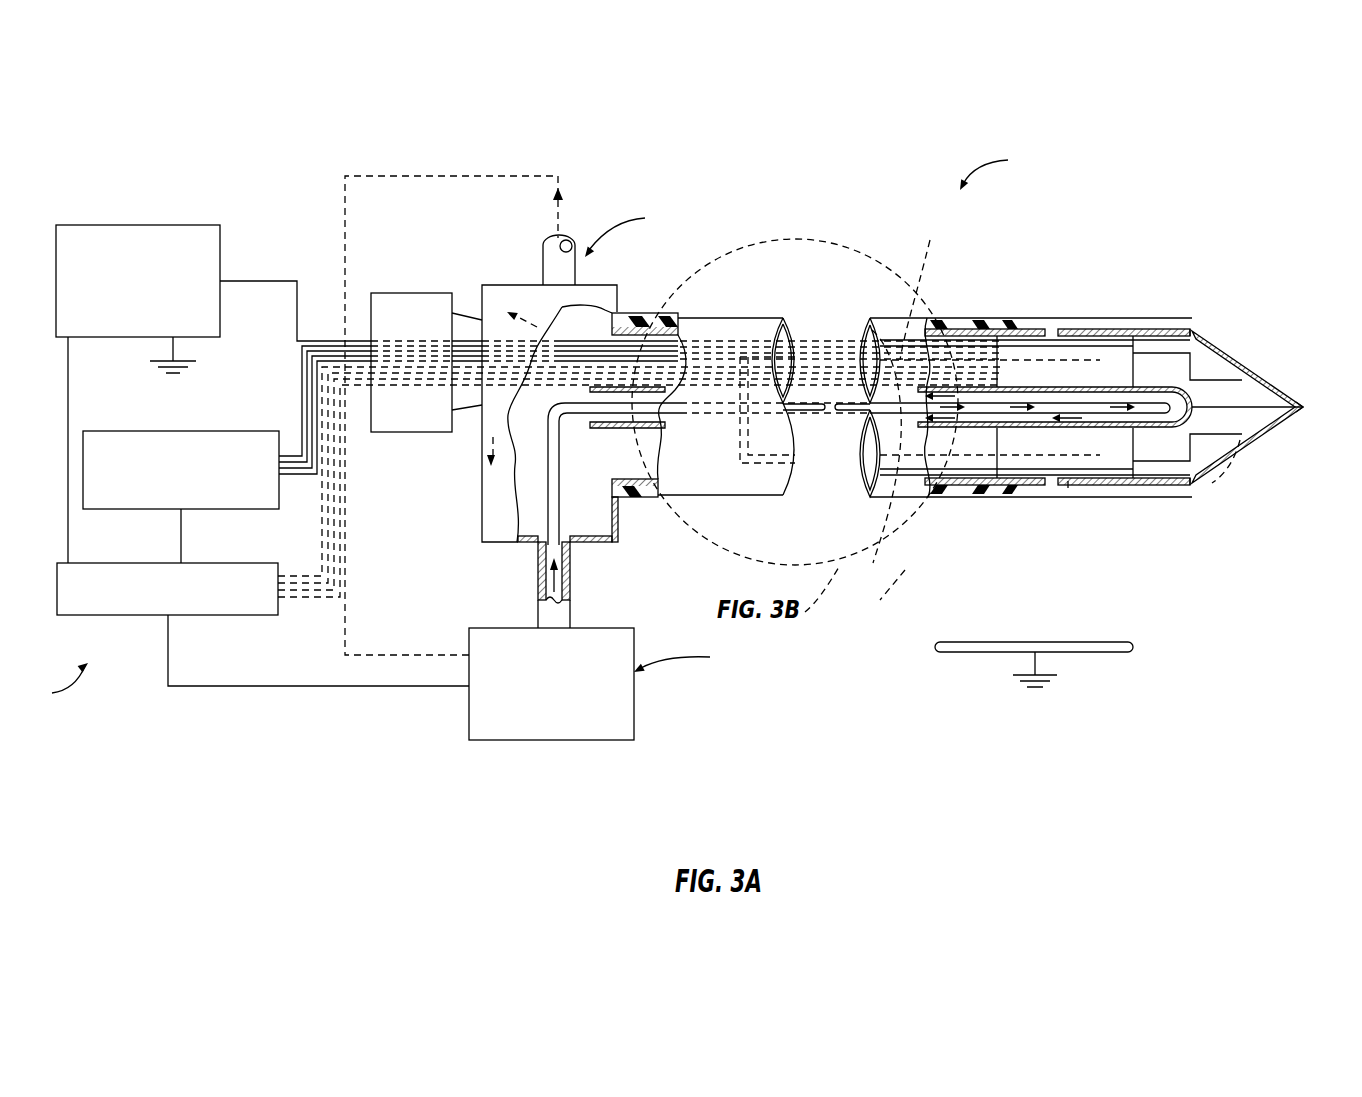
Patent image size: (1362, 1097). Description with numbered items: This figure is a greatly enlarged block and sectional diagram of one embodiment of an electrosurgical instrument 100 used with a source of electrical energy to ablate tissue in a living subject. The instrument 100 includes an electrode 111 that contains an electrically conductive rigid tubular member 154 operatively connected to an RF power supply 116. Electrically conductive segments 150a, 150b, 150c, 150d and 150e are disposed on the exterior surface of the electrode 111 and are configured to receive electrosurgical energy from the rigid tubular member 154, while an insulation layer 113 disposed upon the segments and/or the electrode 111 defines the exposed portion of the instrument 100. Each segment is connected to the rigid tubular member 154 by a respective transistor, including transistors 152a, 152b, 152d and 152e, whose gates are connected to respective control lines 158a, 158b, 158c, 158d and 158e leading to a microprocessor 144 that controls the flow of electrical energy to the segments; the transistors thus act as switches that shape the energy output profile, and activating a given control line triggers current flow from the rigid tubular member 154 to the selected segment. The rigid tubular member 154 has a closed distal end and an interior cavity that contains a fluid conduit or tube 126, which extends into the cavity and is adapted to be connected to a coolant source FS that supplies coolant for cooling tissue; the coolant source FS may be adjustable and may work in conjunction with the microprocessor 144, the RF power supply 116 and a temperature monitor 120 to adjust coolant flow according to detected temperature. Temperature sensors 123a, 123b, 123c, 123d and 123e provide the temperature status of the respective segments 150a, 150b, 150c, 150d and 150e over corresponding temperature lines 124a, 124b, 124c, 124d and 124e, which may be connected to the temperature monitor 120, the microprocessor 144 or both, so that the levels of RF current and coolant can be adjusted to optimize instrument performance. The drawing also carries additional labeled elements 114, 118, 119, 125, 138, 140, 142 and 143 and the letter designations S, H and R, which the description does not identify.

The electrosurgical instrument 100 is at (1012, 169).
The electrode 111 is at (1050, 335).
The insulation layer 113 is at (925, 318).
The coolant supply tube 114 is at (583, 545).
The RF power supply 116 is at (86, 224).
The connector block 118 is at (430, 293).
The connector coupling 119 is at (470, 318).
The temperature monitor 120 is at (153, 431).
The temperature sensor 123a is at (1000, 312).
The temperature sensor 123b is at (1196, 333).
The temperature sensor 123c is at (1303, 407).
The temperature sensor 123d is at (1198, 486).
The temperature sensor 123e is at (968, 490).
The temperature line 124a is at (630, 338).
The temperature line 124b is at (652, 360).
The temperature line 124c is at (700, 360).
The temperature line 124d is at (752, 318).
The temperature line 124e is at (784, 320).
The RF power lead 125 is at (283, 281).
The fluid conduit 126 is at (843, 412).
The coolant inlet 138 is at (548, 578).
The handle / coolant outlet 140 is at (543, 245).
The handle coolant chamber 142 is at (493, 437).
The coolant return line 143 is at (558, 220).
The microprocessor 144 is at (153, 563).
The electrically conductive segment 150a is at (1030, 328).
The electrically conductive segment 150b is at (1150, 328).
The electrically conductive segment 150c is at (1240, 368).
The electrically conductive segment 150d is at (1148, 498).
The electrically conductive segment 150e is at (1028, 498).
The transistor 152a is at (980, 368).
The transistor 152b is at (1130, 360).
The transistor 152d is at (1130, 450).
The transistor 152e is at (978, 432).
The rigid tubular member 154 is at (1195, 418).
The control line 158a is at (890, 322).
The control line 158b is at (872, 326).
The control line 158c is at (1212, 483).
The control line 158d is at (1068, 488).
The control line 158e is at (875, 596).
The system S is at (58, 684).
The handle H is at (625, 233).
The coolant source FS is at (589, 684).
The return electrode plate R is at (1135, 647).